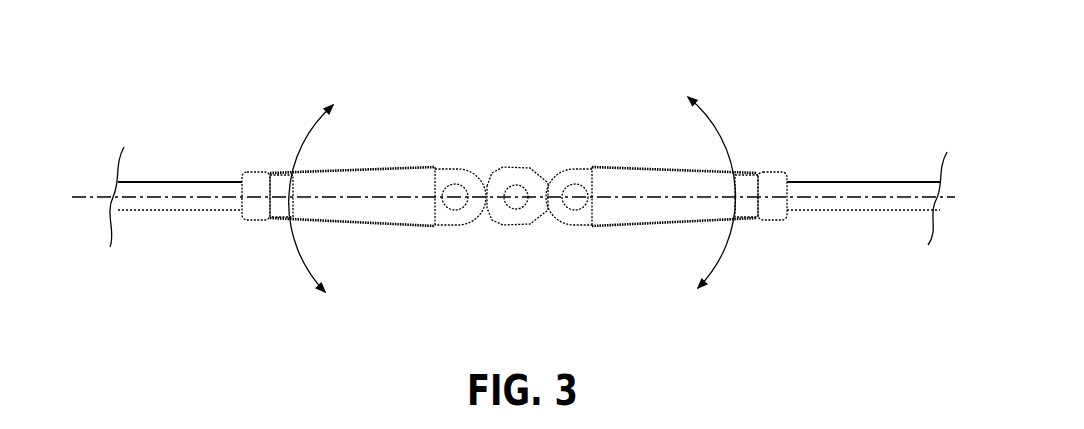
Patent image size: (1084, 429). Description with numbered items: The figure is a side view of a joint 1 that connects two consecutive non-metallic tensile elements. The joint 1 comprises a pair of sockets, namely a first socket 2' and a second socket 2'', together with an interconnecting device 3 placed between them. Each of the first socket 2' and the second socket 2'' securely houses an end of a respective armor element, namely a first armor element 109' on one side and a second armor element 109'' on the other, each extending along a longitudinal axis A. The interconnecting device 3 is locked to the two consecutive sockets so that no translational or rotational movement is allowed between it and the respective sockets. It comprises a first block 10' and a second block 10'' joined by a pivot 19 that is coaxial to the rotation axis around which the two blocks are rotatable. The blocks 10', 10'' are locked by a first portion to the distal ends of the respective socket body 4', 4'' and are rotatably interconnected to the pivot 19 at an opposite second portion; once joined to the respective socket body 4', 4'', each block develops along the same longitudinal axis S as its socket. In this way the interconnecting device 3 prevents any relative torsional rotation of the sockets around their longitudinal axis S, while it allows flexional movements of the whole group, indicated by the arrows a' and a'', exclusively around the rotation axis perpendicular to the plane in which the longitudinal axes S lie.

The joint 1 is at (513, 169).
The interconnecting device 3 is at (523, 141).
The pivot 19 is at (509, 192).
The first socket 2' is at (383, 198).
The second socket 2'' is at (639, 210).
The socket body 4' is at (352, 241).
The socket body 4'' is at (674, 236).
The first block 10' is at (465, 228).
The second block 10'' is at (557, 228).
The first armor element 109' is at (176, 227).
The second armor element 109'' is at (867, 230).
The longitudinal axis S is at (212, 195).
The longitudinal axis A is at (513, 187).
The arrow a' is at (307, 198).
The arrow a'' is at (718, 192).